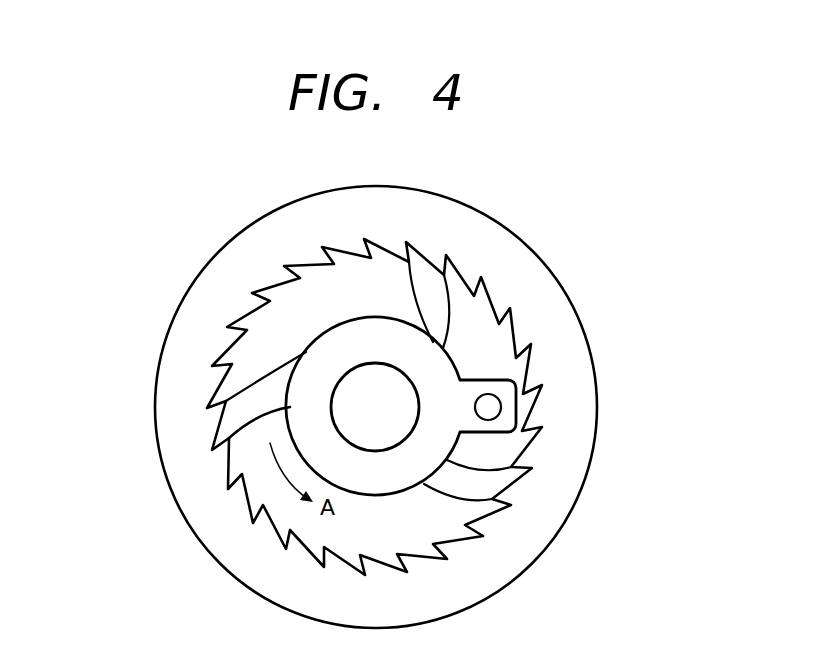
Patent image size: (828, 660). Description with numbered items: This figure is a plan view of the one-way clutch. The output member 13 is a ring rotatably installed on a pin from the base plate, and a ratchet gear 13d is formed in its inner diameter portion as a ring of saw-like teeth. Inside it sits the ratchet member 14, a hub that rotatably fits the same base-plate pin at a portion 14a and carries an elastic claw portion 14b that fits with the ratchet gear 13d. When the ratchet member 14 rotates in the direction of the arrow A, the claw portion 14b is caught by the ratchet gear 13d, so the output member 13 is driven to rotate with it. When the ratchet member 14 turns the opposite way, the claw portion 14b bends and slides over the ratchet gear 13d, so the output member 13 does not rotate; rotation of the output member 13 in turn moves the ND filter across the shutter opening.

The output member 13 is at (175, 379).
The ratchet gear 13d is at (230, 318).
The ratchet member 14 is at (298, 403).
The portion 14a is at (490, 407).
The claw portion 14b is at (430, 298).